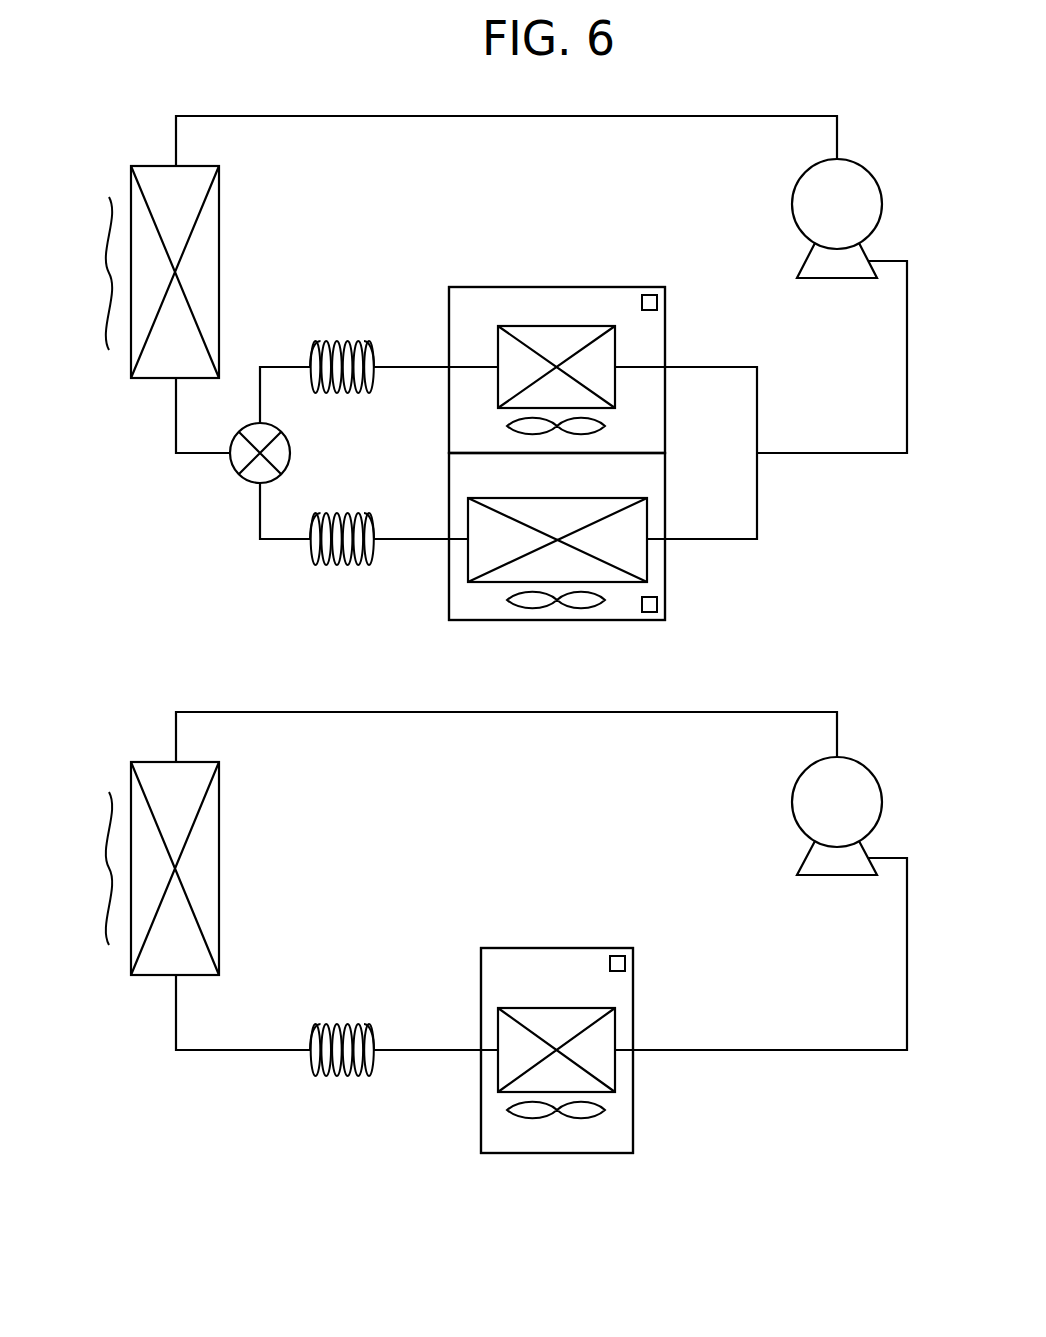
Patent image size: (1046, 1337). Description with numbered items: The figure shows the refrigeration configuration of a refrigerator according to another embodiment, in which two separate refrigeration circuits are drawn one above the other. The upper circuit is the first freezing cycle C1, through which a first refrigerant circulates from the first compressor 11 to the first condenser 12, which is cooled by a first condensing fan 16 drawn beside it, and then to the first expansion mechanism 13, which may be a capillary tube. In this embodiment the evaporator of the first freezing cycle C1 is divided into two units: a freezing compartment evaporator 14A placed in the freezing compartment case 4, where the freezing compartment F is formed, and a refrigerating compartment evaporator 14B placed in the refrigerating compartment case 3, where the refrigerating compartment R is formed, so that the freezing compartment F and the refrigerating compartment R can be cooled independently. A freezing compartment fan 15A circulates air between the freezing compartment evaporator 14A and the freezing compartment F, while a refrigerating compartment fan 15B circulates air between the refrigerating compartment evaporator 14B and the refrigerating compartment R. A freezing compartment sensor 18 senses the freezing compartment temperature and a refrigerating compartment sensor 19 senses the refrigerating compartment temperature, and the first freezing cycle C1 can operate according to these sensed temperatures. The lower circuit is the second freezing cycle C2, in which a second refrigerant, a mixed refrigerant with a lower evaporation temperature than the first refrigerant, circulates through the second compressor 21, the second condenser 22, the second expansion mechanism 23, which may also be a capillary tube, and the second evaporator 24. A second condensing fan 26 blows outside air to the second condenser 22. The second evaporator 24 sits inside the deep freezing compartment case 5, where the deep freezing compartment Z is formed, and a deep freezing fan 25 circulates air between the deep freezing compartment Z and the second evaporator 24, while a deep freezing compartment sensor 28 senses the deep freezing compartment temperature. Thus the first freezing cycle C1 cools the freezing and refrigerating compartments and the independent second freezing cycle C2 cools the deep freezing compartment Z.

The first freezing cycle C1 is at (104, 136).
The first compressor 11 is at (869, 196).
The first condenser 12 is at (155, 177).
The first expansion mechanism 13 is at (236, 550).
The freezing compartment evaporator 14A is at (631, 557).
The refrigerating compartment evaporator 14B is at (557, 338).
The freezing compartment fan 15A is at (528, 601).
The refrigerating compartment fan 15B is at (607, 426).
The first condensing fan 16 is at (104, 229).
The freezing compartment sensor 18 is at (650, 612).
The refrigerating compartment sensor 19 is at (650, 295).
The refrigerating compartment case 3 is at (606, 287).
The freezing compartment case 4 is at (594, 620).
The refrigerating compartment R is at (490, 308).
The freezing compartment F is at (476, 600).
The second freezing cycle C2 is at (104, 731).
The second compressor 21 is at (869, 793).
The second condenser 22 is at (155, 772).
The second expansion mechanism 23 is at (343, 1022).
The second evaporator 24 is at (553, 1018).
The deep freezing fan 25 is at (529, 1112).
The second condensing fan 26 is at (104, 826).
The deep freezing compartment sensor 28 is at (618, 956).
The deep freezing compartment case 5 is at (633, 1128).
The deep freezing compartment Z is at (577, 1136).